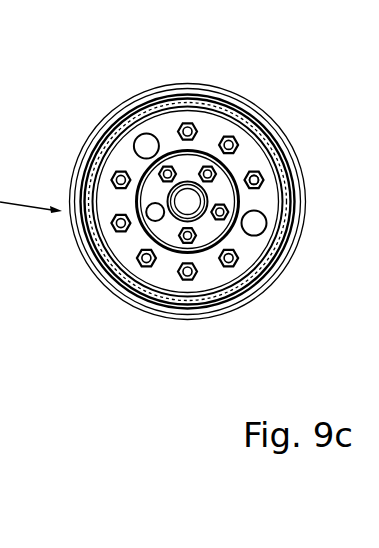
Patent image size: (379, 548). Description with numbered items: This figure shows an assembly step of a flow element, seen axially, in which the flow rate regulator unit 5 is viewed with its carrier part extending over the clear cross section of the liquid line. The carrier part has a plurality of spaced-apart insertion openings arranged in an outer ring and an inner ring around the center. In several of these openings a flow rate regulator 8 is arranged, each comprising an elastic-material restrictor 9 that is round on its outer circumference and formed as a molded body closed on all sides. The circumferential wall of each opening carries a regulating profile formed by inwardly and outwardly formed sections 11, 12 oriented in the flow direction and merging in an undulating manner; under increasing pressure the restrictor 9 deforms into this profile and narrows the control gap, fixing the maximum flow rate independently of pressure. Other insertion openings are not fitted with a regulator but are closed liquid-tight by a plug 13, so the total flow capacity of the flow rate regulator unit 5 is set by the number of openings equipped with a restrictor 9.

The flow rate regulator unit 5 is at (256, 288).
The flow rate regulator 8 is at (214, 284).
The restrictor 9 is at (190, 124).
The inwardly formed section 11 is at (263, 168).
The outwardly formed section 12 is at (258, 164).
The plug 13 is at (146, 146).